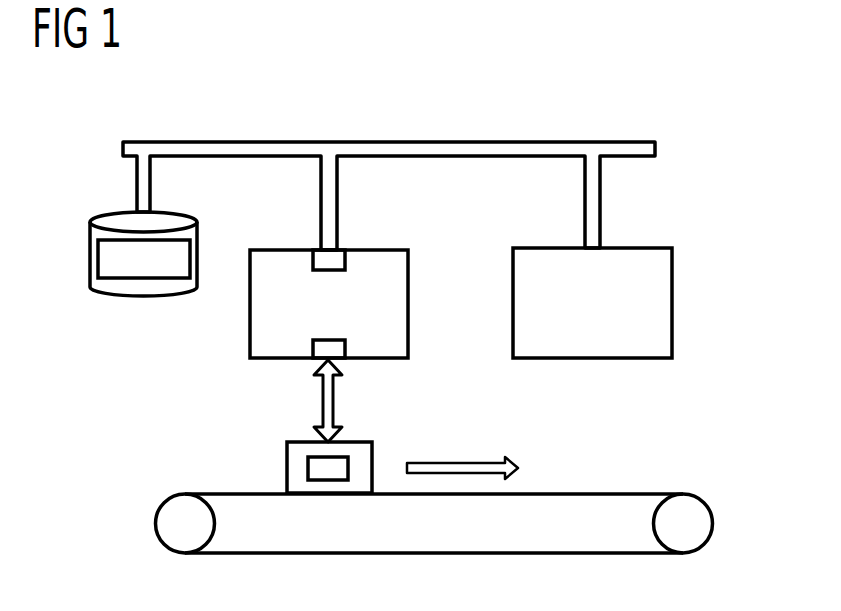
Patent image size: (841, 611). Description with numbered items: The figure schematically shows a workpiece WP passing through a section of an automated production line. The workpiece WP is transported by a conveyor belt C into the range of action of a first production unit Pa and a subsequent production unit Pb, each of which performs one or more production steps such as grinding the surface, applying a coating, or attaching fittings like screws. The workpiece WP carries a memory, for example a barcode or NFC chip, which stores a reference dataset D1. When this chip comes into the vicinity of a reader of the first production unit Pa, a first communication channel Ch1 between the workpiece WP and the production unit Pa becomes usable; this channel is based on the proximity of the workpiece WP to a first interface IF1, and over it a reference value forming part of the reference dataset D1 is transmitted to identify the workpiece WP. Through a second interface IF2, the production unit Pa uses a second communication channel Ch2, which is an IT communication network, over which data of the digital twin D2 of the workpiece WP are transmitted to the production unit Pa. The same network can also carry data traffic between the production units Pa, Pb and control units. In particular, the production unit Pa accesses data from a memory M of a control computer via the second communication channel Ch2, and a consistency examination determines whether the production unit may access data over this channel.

The second communication channel Ch2 is at (284, 141).
The memory M is at (113, 212).
The digital twin D2 is at (98, 262).
The first production unit Pa is at (380, 250).
The second production unit Pb is at (635, 248).
The second interface IF2 is at (320, 258).
The first interface IF1 is at (330, 345).
The first communication channel Ch1 is at (322, 400).
The workpiece WP is at (287, 468).
The reference dataset D1 is at (345, 457).
The conveyor belt C is at (578, 494).